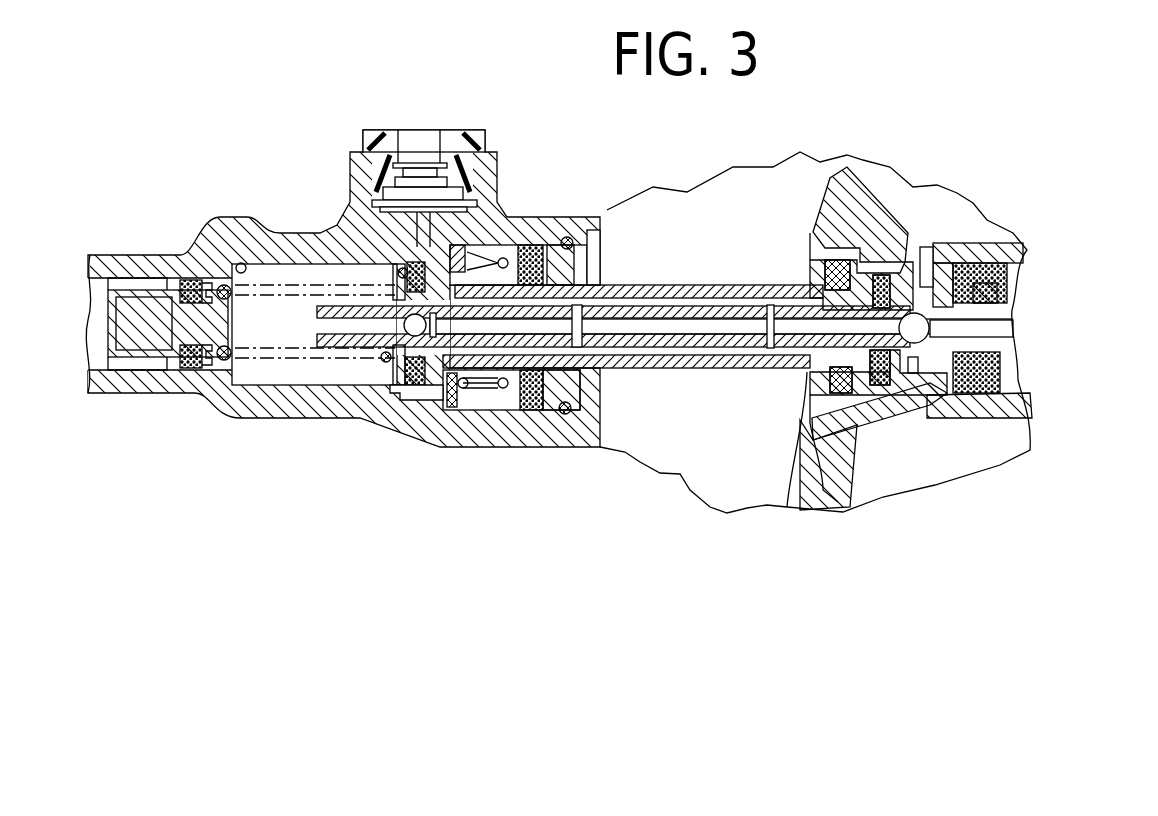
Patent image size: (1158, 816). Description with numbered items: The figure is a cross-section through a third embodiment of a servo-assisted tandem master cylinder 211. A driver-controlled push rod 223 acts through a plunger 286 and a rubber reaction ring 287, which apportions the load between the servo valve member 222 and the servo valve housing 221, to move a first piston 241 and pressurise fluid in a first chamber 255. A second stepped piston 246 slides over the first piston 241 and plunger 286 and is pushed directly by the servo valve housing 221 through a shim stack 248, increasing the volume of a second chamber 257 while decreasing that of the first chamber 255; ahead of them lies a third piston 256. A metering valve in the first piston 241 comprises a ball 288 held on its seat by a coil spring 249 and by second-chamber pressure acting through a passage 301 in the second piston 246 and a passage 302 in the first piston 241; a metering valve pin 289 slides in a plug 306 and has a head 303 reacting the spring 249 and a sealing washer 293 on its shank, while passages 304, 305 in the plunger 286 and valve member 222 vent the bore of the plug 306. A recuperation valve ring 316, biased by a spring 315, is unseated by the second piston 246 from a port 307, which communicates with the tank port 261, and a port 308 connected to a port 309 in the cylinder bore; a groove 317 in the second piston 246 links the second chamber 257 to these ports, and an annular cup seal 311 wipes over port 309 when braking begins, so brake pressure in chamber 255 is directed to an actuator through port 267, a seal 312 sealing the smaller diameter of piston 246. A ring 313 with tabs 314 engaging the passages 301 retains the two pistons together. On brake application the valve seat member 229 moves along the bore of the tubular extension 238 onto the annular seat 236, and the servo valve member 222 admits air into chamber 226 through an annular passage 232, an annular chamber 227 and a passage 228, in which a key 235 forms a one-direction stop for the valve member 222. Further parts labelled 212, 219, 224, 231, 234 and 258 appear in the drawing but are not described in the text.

The master cylinder 211 is at (109, 398).
The outlet end / flow direction 212 is at (960, 488).
The bearing housing block 219 is at (855, 178).
The servo valve housing 221 is at (880, 222).
The servo valve member 222 is at (933, 365).
The push rod 223 is at (1000, 328).
The cavity 224 is at (742, 233).
The chamber 226 is at (887, 190).
The annular chamber 227 is at (883, 497).
The passage 228 is at (935, 268).
The valve seat member 229 is at (1002, 258).
The hub wall 231 is at (858, 445).
The annular passage 232 is at (995, 370).
The upper seal 234 is at (992, 293).
The key 235 is at (940, 242).
The annular seat 236 is at (942, 425).
The tubular extension 238 is at (1013, 410).
The first piston 241 is at (320, 345).
The second stepped piston 246 is at (605, 283).
The shim stack 248 is at (828, 262).
The coil spring 249 is at (480, 412).
The first chamber 255 is at (299, 333).
The third piston 256 is at (150, 340).
The second chamber 257 is at (490, 412).
The piston seal 258 is at (377, 400).
The port 261 is at (403, 190).
The port 267 is at (238, 265).
The plunger 286 is at (703, 368).
The rubber reaction ring 287 is at (770, 510).
The metering valve ball 288 is at (337, 267).
The metering valve pin 289 is at (602, 405).
The sealing washer 293 is at (515, 412).
The passage 301 is at (465, 412).
The passage 302 is at (555, 258).
The head 303 is at (455, 420).
The passage 304 is at (640, 320).
The passage 305 is at (772, 348).
The plug 306 is at (622, 348).
The port 307 is at (347, 220).
The port 308 is at (400, 420).
The port 309 is at (352, 412).
The annular cup seal 311 is at (345, 230).
The seal 312 is at (567, 240).
The ring 313 is at (522, 245).
The tabs 314 is at (435, 195).
The spring 315 is at (505, 412).
The recuperation valve ring 316 is at (507, 220).
The groove 317 is at (458, 430).